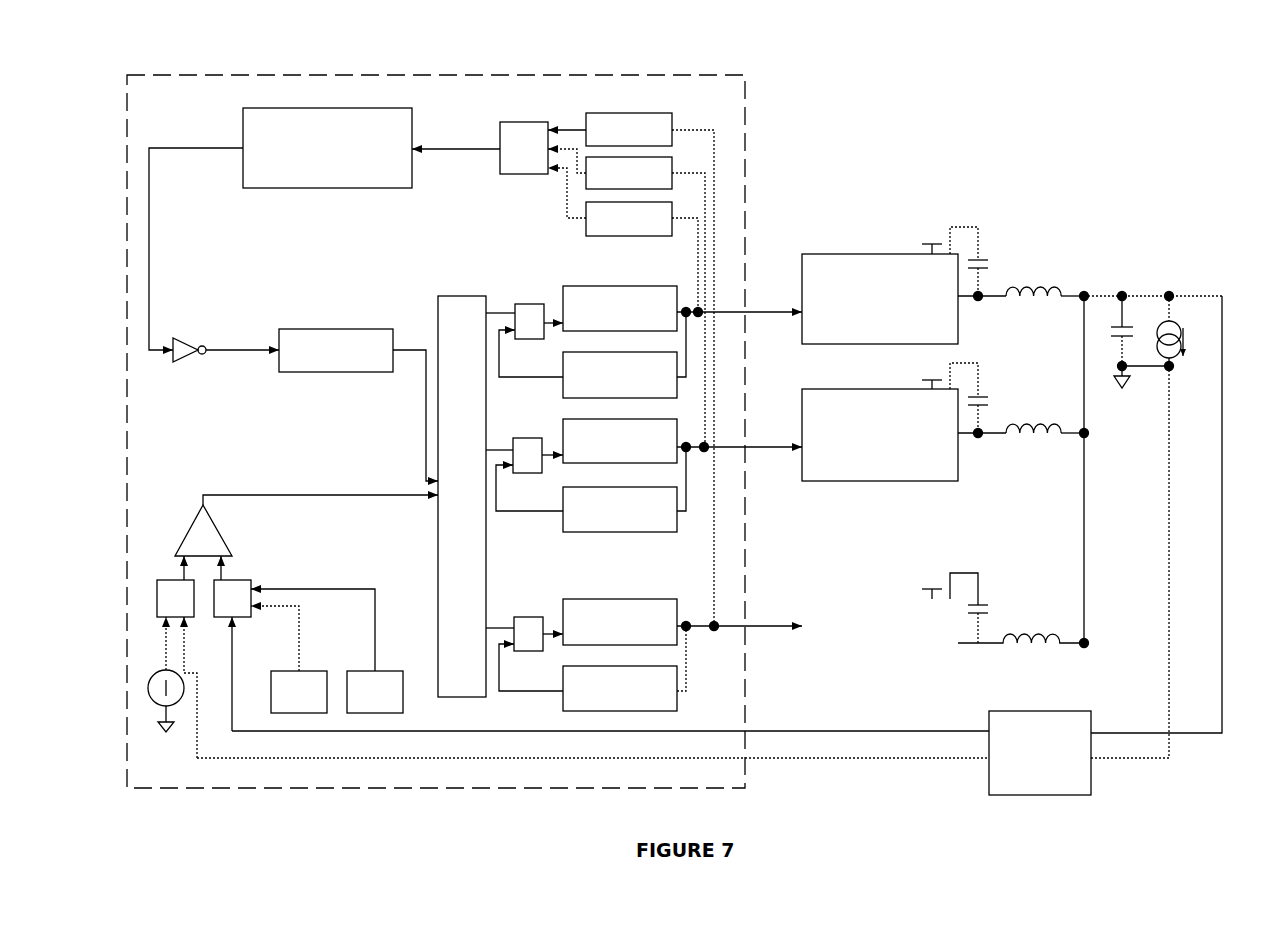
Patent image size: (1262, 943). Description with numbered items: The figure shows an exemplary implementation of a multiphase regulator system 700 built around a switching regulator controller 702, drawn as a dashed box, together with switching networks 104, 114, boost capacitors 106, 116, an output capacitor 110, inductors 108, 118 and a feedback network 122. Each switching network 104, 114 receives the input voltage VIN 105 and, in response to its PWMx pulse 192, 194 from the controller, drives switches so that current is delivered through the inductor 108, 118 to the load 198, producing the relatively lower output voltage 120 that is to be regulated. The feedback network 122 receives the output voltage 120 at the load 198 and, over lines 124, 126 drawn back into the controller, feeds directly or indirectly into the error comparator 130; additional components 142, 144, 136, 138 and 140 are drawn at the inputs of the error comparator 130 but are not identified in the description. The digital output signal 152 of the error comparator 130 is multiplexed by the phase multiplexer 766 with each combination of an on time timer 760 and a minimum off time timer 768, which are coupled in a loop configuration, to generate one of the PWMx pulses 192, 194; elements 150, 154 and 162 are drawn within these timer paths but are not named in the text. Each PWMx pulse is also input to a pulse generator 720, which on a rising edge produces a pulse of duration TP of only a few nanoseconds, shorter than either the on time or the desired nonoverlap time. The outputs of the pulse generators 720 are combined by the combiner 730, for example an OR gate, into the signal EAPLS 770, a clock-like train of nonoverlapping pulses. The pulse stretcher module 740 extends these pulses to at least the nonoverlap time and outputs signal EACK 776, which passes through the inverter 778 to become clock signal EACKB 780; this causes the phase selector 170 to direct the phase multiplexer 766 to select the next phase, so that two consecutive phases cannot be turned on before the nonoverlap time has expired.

The multiphase regulator system 700 is at (1081, 108).
The switching regulator controller 702 is at (275, 73).
The pulse stretcher module 740 is at (243, 117).
The signal EAPLS 770 is at (468, 148).
The pulse generator 720 is at (588, 113).
The combiner 730 is at (526, 174).
The output signal EACK 776 is at (150, 232).
The inverter 778 is at (186, 338).
The clock signal EACKB 780 is at (276, 358).
The phase selector 170 is at (317, 329).
The on time timer 760 is at (620, 286).
The digital output signal 152 is at (509, 306).
The pulse generator 150 is at (528, 437).
The node 162 is at (700, 441).
The feedback line 154 is at (507, 518).
The minimum off time timer 768 is at (615, 533).
The phase multiplexer 766 is at (438, 612).
The reference block 142 is at (165, 580).
The error comparator 130 is at (225, 538).
The feedback block 144 is at (218, 620).
The block 138 is at (287, 670).
The block 136 is at (388, 670).
The reference voltage source 140 is at (155, 715).
The input voltage VIN 105 is at (928, 228).
The switching network 104 is at (875, 253).
The boost capacitor 106 is at (985, 258).
The inductor 108 is at (1040, 285).
The output capacitor 110 is at (1122, 290).
The output voltage VOUT 120 is at (1170, 290).
The PWMx pulse 192 is at (762, 308).
The switching network 114 is at (873, 388).
The boost capacitor 116 is at (985, 395).
The inductor 118 is at (1038, 425).
The PWMx pulse 194 is at (762, 443).
The load 198 is at (1178, 368).
The feedback network 122 is at (1047, 710).
The voltage sense line 124 is at (1099, 730).
The current sense line 126 is at (1100, 762).